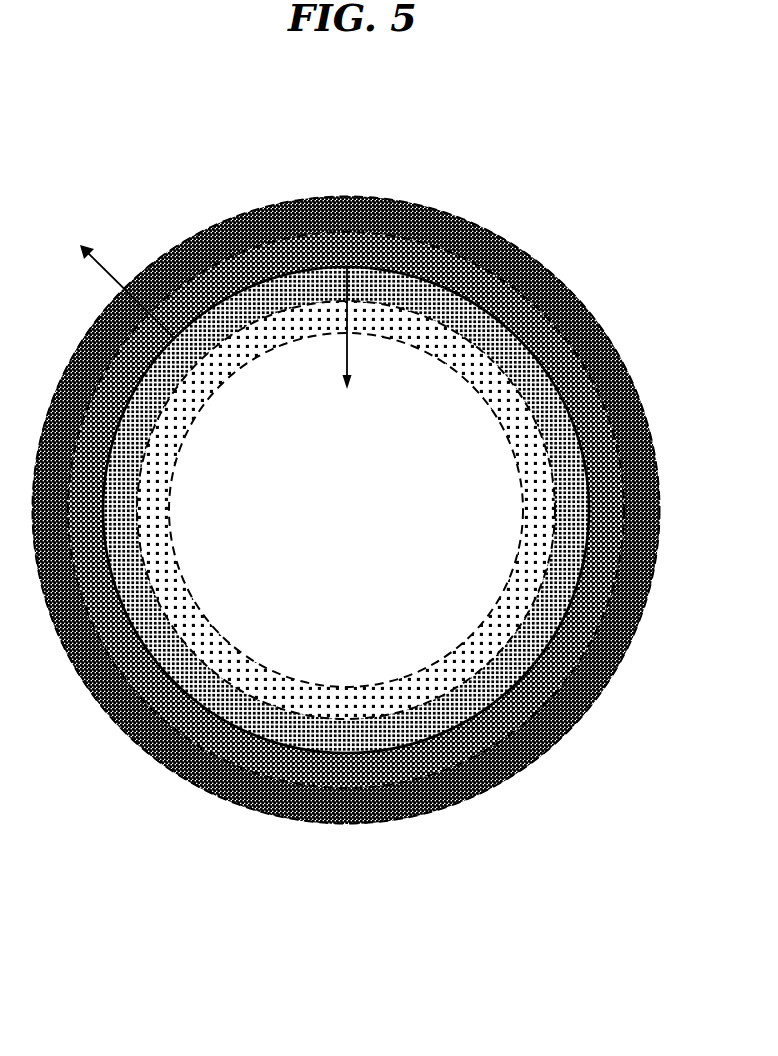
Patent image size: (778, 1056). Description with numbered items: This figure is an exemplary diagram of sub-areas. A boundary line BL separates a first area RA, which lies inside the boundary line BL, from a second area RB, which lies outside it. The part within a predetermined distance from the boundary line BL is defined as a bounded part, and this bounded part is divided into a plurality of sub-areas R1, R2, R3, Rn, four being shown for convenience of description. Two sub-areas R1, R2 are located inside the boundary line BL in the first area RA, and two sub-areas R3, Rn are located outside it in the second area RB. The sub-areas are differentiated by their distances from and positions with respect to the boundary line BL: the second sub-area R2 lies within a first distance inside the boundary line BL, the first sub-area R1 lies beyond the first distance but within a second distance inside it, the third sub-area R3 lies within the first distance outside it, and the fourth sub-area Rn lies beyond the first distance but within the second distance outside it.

The boundary line BL is at (263, 273).
The first area RA is at (369, 328).
The second area RB is at (127, 291).
The first sub-area R1 is at (207, 640).
The second sub-area R2 is at (187, 678).
The third sub-area R3 is at (262, 755).
The fourth sub-area Rn is at (323, 808).